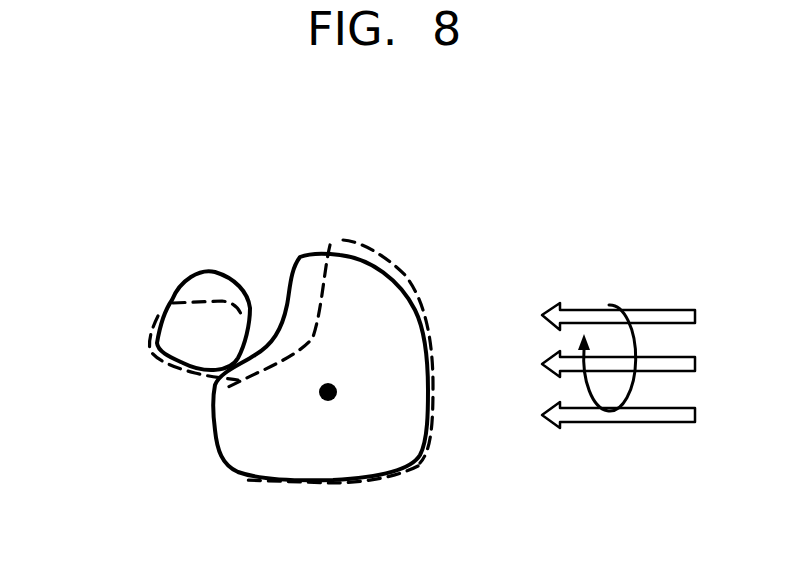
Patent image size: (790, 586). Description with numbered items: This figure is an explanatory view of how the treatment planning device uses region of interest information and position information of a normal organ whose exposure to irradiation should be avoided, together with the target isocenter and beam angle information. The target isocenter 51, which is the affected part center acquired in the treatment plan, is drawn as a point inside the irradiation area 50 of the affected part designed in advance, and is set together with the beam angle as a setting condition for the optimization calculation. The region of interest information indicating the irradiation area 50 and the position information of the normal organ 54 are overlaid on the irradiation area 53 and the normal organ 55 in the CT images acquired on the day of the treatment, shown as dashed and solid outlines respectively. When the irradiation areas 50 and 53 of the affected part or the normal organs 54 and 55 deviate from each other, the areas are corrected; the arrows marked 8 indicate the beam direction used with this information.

The irradiation area of the affected part 50 is at (303, 253).
The target isocenter 51 is at (326, 392).
The irradiation area 53 is at (365, 247).
The normal organ 54 is at (158, 316).
The normal organ 55 is at (198, 267).
The airflow / rotation direction 8 is at (630, 417).